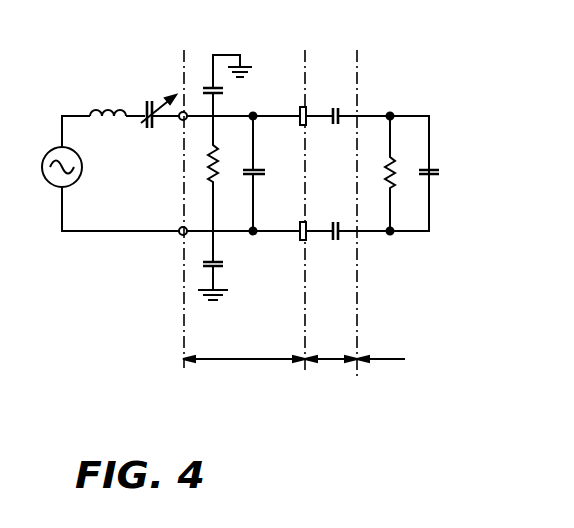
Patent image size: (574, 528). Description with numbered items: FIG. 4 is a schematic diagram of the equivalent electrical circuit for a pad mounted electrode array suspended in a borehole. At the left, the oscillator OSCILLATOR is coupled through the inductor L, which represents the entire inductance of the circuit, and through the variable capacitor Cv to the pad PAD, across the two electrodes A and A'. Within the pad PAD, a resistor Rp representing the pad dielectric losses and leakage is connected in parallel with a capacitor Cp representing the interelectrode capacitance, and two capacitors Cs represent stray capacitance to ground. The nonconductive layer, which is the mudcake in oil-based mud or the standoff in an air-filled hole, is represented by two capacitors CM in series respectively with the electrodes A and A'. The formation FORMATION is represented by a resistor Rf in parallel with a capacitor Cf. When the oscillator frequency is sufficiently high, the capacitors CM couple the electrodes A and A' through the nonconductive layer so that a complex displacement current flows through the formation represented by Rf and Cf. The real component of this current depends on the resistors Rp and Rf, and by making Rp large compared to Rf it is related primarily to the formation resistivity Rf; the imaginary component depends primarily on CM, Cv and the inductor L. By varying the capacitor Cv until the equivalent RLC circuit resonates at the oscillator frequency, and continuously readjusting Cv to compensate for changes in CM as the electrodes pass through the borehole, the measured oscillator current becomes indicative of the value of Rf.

The inductor L is at (117, 108).
The variable capacitor Cv is at (151, 100).
The stray capacitor Cs is at (222, 90).
The pad resistor Rp is at (217, 157).
The interelectrode capacitor Cp is at (268, 174).
The electrode A' is at (291, 102).
The electrode A is at (290, 245).
The nonconductive layer capacitor CM is at (325, 250).
The formation resistor Rf is at (388, 165).
The formation capacitor Cf is at (448, 170).
The oscillator OSCILLATOR is at (54, 188).
The pad PAD is at (264, 362).
The formation FORMATION is at (386, 359).